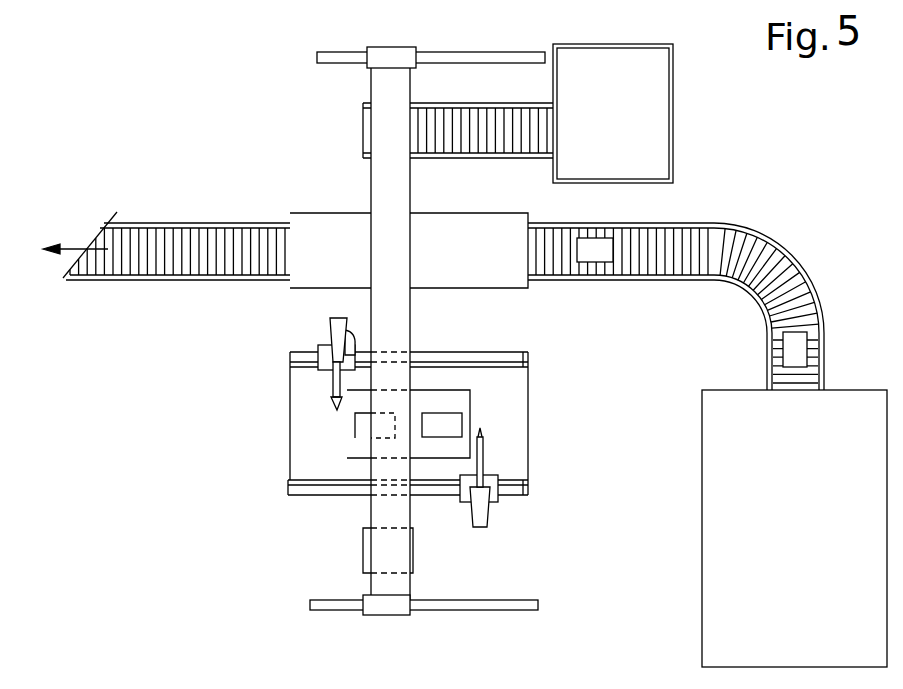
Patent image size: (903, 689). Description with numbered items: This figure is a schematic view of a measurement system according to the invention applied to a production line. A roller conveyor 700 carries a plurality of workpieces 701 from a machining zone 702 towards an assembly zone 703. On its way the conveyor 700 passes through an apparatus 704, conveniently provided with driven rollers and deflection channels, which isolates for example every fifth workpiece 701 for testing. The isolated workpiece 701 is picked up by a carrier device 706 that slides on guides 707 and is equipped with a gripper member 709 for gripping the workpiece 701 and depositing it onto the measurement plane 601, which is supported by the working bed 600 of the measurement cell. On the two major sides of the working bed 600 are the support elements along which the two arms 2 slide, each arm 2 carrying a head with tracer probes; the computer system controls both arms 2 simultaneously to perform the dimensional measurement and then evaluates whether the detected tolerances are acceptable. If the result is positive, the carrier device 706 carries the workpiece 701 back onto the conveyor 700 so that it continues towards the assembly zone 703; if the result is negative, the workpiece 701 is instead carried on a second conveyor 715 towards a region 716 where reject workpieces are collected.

The arm 2 is at (335, 316).
The working bed 600 is at (308, 450).
The measurement plane 601 is at (355, 430).
The roller conveyor 700 is at (737, 297).
The workpiece 701 is at (597, 248).
The machining zone 702 is at (728, 452).
The assembly zone 703 is at (73, 242).
The apparatus for isolating workpieces 704 is at (313, 290).
The carrier device 706 is at (412, 343).
The guides 707 is at (519, 58).
The gripper member 709 is at (395, 553).
The conveyor 715 is at (470, 132).
The region for collection of reject workpieces 716 is at (643, 147).